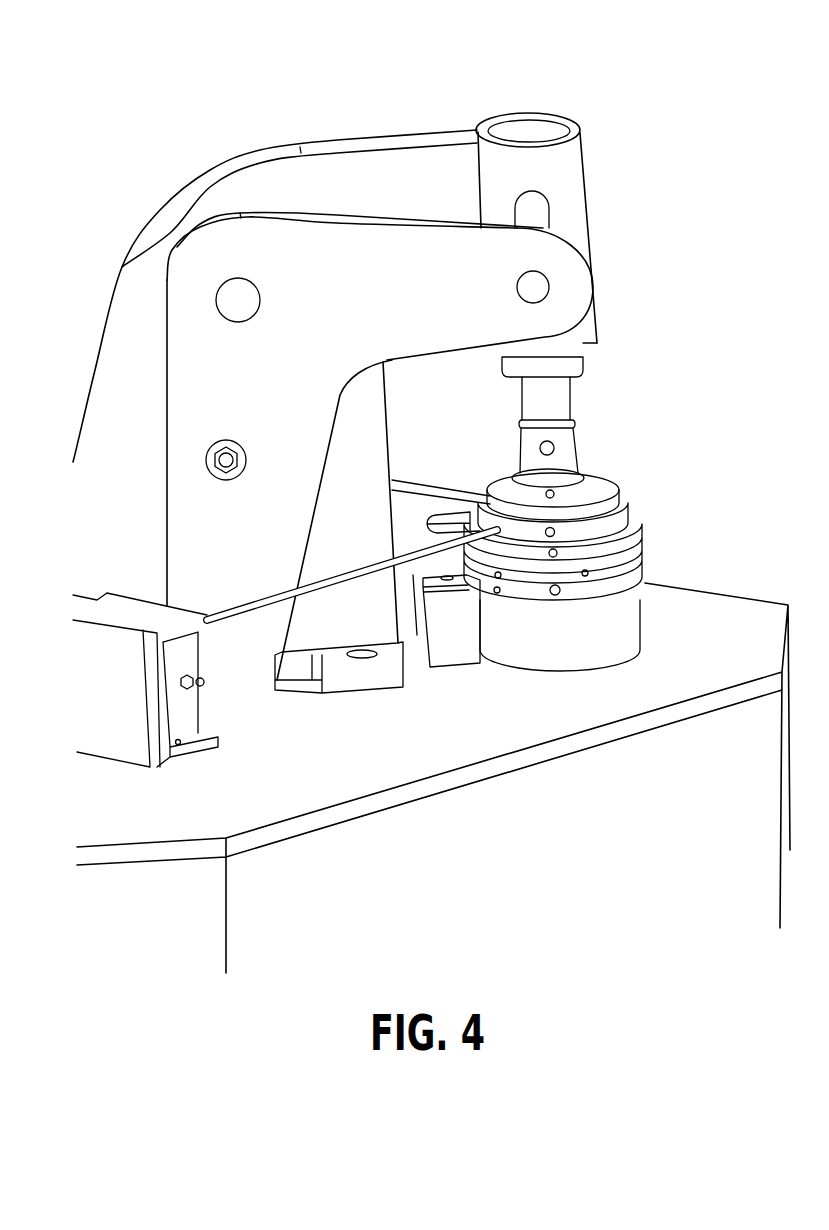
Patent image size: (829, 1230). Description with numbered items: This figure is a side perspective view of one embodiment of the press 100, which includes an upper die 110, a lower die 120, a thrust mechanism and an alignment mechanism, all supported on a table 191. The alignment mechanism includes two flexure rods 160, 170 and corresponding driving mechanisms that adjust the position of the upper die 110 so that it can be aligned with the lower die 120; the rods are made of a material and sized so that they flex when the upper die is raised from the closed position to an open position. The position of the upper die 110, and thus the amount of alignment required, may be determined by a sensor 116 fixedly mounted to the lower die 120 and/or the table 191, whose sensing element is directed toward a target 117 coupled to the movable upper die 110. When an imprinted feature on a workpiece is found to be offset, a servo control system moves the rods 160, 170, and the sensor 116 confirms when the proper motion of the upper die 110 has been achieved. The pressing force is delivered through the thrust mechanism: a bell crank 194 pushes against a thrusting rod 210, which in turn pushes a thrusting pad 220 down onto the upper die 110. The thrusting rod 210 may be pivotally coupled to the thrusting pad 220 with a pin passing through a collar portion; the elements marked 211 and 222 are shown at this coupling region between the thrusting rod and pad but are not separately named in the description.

The press 100 is at (632, 72).
The bell crank 194 is at (362, 308).
The thrusting rod 210 is at (577, 383).
The ring 222 is at (577, 434).
The collar 211 is at (580, 450).
The thrusting pad 220 is at (603, 476).
The upper die 110 is at (645, 488).
The lower die 120 is at (646, 528).
The flexure rod 170 is at (403, 483).
The target 117 is at (447, 517).
The sensor 116 is at (472, 638).
The flexure rod 160 is at (252, 612).
The table 191 is at (600, 745).